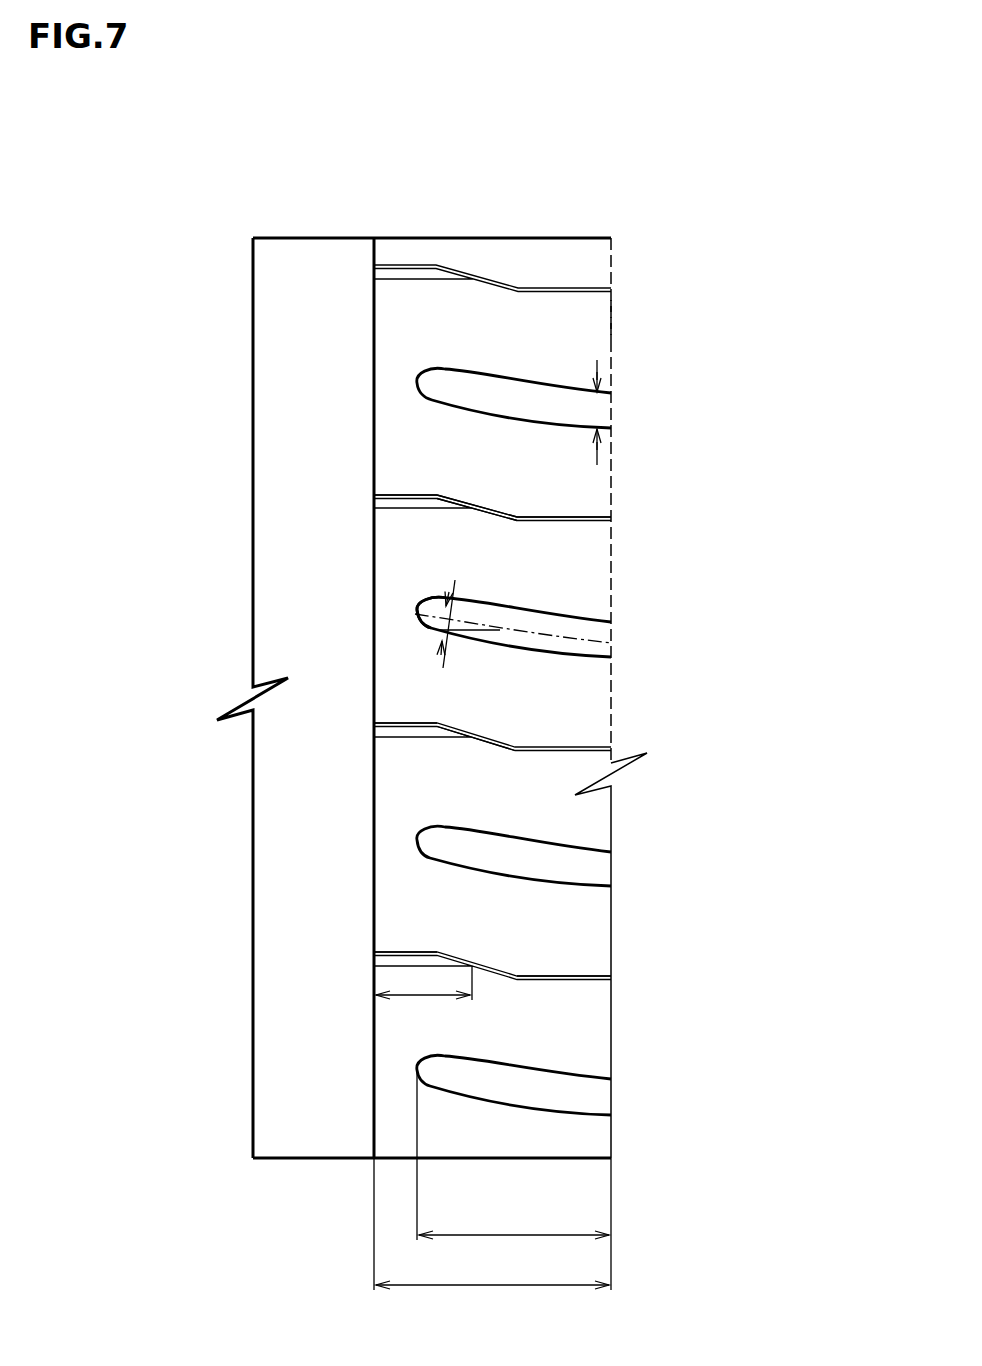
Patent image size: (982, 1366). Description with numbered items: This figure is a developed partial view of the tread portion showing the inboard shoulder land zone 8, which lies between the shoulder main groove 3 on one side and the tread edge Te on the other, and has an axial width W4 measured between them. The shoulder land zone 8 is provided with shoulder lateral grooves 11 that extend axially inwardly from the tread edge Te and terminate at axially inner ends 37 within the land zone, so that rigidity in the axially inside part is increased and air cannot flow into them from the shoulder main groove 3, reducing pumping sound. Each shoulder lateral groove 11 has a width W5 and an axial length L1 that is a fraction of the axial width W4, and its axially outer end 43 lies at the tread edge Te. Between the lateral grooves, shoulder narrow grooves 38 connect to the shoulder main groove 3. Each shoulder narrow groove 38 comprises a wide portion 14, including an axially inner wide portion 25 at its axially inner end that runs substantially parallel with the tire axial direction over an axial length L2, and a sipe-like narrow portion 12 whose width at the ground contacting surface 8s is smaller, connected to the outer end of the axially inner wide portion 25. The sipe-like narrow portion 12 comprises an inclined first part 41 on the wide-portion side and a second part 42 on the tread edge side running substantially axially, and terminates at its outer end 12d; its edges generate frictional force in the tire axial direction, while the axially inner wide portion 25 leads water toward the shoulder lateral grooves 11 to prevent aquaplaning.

The shoulder main groove 3 is at (309, 282).
The shoulder land zone 8 is at (479, 267).
The ground contacting surface 8s is at (531, 328).
The tread edge Te is at (612, 318).
The axially inner wide portion 25 is at (412, 507).
The wide portion 14 is at (406, 731).
The sipe-like narrow portion 12 is at (491, 741).
The shoulder narrow groove 38 is at (133, 780).
The second part 42 is at (562, 520).
The first part 41 is at (495, 513).
The groove end portion 12d is at (566, 978).
The shoulder lateral groove 11 is at (541, 413).
The axially inner end 37 is at (417, 843).
The axially outer end 43 is at (612, 643).
The width W5 is at (597, 410).
The axial length L2 is at (423, 1015).
The axial length L1 is at (513, 1171).
The axial width W4 is at (492, 1238).